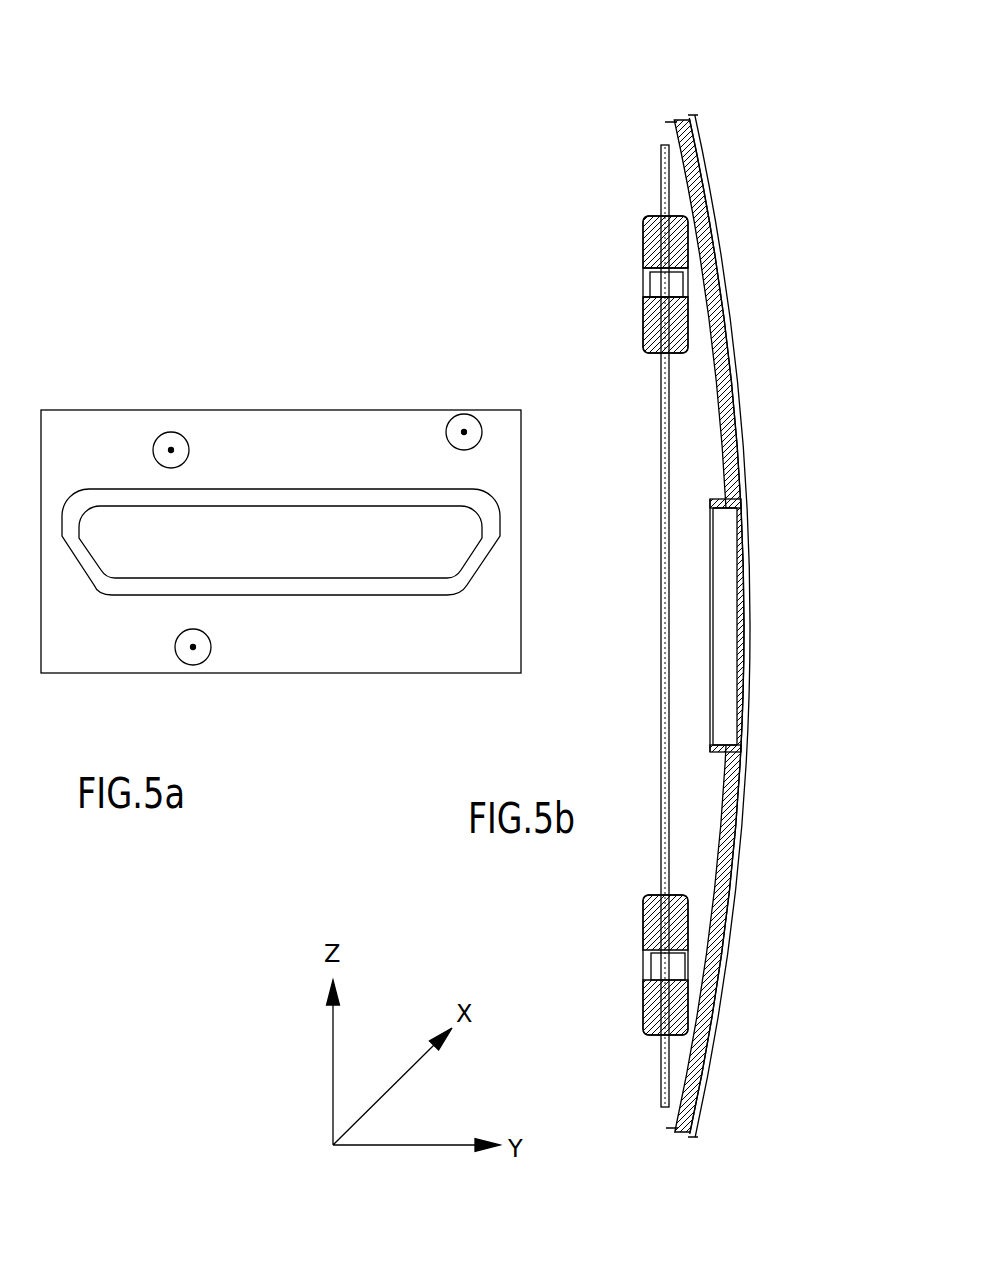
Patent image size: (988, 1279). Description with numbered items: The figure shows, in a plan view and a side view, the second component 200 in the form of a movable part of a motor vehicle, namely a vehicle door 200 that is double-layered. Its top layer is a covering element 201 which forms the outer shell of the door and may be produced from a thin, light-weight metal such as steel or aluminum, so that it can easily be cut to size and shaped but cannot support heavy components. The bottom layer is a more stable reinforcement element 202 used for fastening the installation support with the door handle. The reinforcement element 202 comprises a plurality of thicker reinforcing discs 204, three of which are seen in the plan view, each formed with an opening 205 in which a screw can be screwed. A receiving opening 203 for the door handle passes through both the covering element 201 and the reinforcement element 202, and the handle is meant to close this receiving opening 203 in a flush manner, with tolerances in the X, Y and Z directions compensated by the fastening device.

In FIG. 5b, the second component 200 is at (729, 125).
In FIG. 5b, the covering element 201 is at (717, 232).
In FIG. 5a, the reinforcement element 202 is at (255, 425).
In FIG. 5b, the reinforcement element 202 is at (661, 163).
In FIG. 5a, the receiving opening 203 is at (352, 555).
In FIG. 5b, the receiving opening 203 is at (732, 607).
In FIG. 5a, the reinforcing discs 204 is at (180, 440).
In FIG. 5b, the reinforcing discs 204 is at (643, 223).
In FIG. 5a, the openings 205 is at (170, 449).
In FIG. 5b, the openings 205 is at (663, 288).